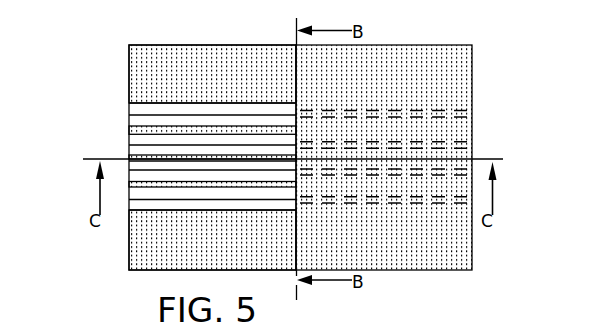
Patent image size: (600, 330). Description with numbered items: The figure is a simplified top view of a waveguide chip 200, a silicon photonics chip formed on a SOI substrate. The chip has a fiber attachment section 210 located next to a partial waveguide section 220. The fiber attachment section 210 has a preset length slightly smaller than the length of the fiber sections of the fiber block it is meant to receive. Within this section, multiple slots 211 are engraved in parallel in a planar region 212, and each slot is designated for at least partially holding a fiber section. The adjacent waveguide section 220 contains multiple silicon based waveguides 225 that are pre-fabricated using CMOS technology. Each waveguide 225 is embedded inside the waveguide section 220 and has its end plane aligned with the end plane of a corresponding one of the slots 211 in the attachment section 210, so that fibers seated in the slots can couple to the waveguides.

The waveguide chip 200 is at (99, 40).
The fiber attachment section 210 is at (130, 249).
The slots 211 is at (131, 110).
The planar region 212 is at (225, 82).
The waveguide section 220 is at (472, 258).
The silicon based waveguides 225 is at (407, 203).